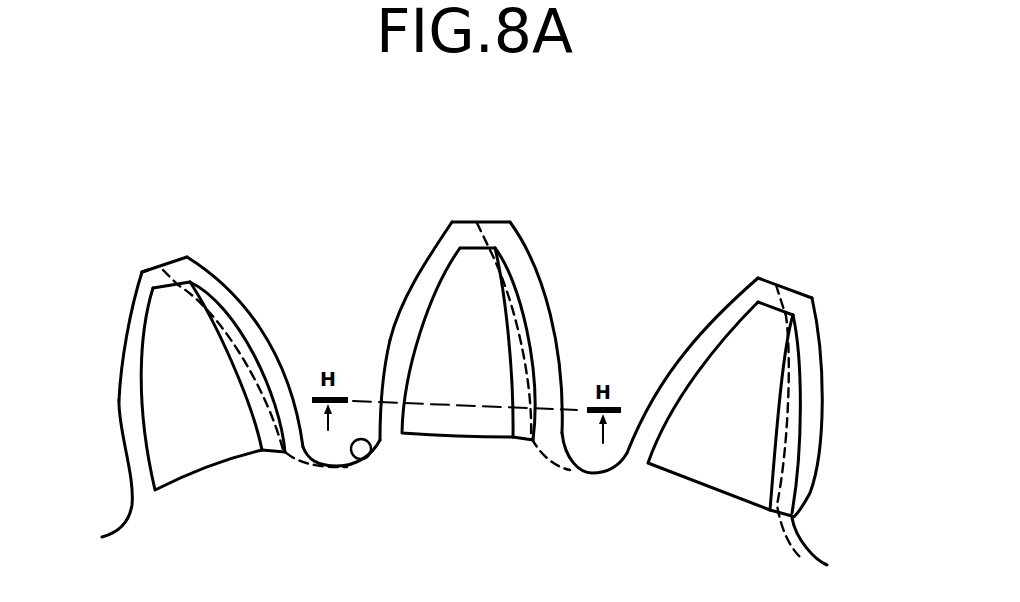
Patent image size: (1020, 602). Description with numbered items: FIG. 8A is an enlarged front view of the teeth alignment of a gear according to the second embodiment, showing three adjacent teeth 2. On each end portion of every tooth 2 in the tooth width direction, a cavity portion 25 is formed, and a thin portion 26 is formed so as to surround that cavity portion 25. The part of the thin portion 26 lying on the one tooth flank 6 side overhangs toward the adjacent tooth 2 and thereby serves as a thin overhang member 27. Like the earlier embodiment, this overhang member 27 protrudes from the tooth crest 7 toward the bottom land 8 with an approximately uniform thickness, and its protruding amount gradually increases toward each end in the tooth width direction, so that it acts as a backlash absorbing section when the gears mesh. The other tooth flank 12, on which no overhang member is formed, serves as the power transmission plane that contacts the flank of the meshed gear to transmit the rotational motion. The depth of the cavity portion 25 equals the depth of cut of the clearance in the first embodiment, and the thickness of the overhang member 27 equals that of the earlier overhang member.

The tooth 2 is at (155, 256).
The one tooth flank 6 is at (217, 278).
The tooth crest 7 is at (142, 272).
The bottom land 8 is at (372, 458).
The other tooth flank 12 is at (118, 418).
The cavity portion 25 is at (163, 352).
The thin portion 26 is at (133, 310).
The thin overhang member 27 is at (278, 352).